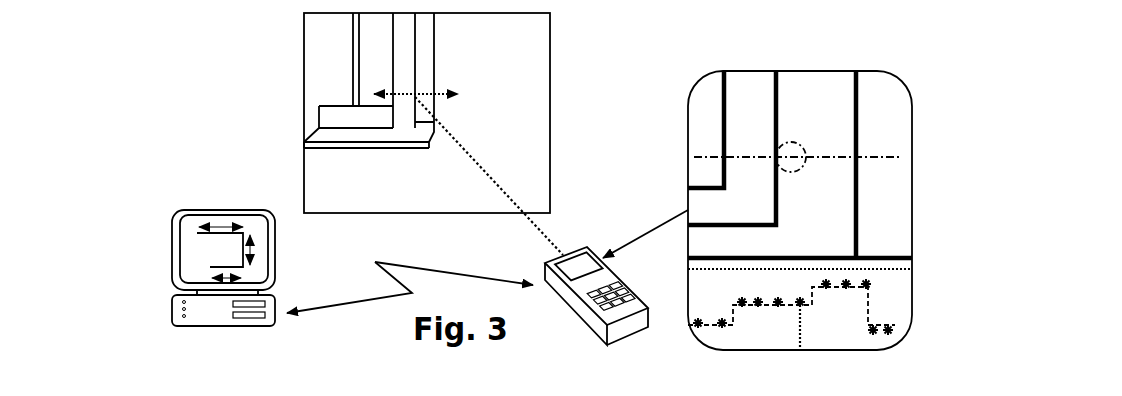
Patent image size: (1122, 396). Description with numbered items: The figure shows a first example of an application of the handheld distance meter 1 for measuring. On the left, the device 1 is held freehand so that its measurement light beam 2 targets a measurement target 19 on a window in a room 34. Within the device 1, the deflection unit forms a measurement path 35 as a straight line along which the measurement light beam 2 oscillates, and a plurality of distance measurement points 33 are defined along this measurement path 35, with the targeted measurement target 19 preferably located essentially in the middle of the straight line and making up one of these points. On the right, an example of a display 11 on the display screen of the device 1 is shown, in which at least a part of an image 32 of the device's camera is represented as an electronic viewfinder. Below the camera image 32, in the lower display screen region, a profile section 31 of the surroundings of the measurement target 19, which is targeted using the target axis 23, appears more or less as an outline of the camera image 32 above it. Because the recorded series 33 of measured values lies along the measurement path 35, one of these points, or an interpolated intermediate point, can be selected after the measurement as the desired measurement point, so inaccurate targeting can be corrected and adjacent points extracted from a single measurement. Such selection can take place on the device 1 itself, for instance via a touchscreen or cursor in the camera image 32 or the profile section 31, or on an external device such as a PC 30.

The handheld distance meter 1 is at (528, 257).
The measurement light beam 2 is at (548, 243).
The display 11 is at (907, 90).
The measurement target 19 is at (407, 84).
The target axis 23 is at (776, 150).
The PC 30 is at (178, 210).
The profile section 31 is at (898, 287).
The camera image 32 is at (702, 141).
The distance measurement points 33 is at (893, 328).
The room 34 is at (304, 92).
The measurement path 35 is at (455, 93).